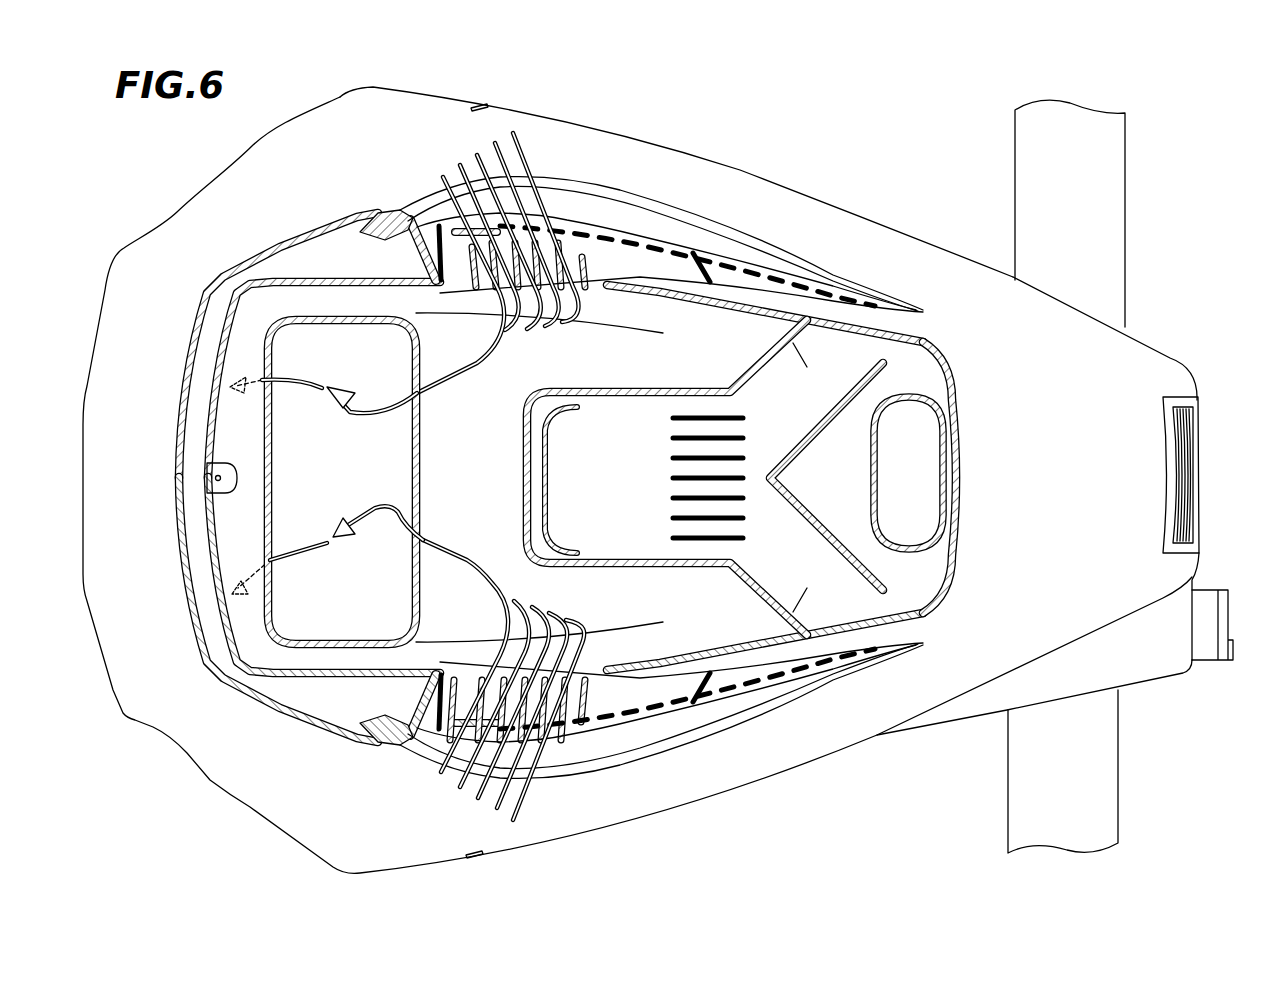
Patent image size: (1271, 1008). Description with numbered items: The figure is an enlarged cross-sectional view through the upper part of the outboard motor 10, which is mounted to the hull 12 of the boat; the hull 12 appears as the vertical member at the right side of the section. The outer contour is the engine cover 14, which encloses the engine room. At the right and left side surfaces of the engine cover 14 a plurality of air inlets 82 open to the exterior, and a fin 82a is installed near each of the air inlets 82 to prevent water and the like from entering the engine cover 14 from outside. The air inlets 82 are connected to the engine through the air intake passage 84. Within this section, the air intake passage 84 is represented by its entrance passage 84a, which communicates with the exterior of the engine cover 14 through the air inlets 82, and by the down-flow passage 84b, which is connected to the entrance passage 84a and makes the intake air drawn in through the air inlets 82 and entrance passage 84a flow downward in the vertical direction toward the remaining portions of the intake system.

The outboard motor 10 is at (790, 178).
The hull 12 is at (1110, 230).
The engine cover 14 is at (737, 188).
The air inlets 82 is at (593, 280).
The fin 82a is at (560, 245).
The air intake passage 84 is at (435, 326).
The entrance passage 84a is at (487, 491).
The down-flow passage 84b is at (275, 470).